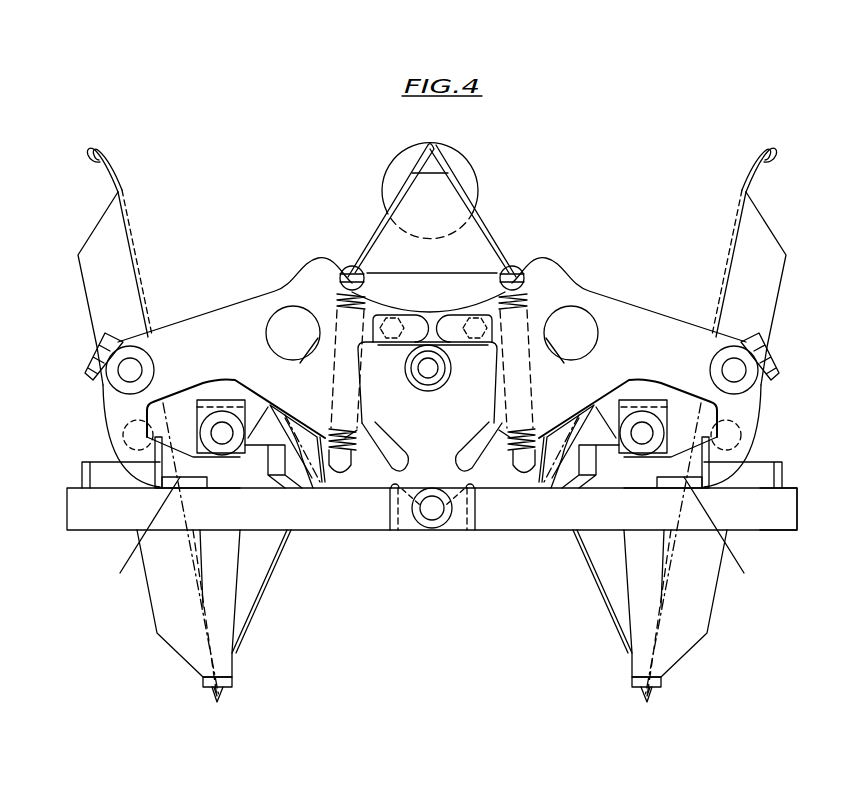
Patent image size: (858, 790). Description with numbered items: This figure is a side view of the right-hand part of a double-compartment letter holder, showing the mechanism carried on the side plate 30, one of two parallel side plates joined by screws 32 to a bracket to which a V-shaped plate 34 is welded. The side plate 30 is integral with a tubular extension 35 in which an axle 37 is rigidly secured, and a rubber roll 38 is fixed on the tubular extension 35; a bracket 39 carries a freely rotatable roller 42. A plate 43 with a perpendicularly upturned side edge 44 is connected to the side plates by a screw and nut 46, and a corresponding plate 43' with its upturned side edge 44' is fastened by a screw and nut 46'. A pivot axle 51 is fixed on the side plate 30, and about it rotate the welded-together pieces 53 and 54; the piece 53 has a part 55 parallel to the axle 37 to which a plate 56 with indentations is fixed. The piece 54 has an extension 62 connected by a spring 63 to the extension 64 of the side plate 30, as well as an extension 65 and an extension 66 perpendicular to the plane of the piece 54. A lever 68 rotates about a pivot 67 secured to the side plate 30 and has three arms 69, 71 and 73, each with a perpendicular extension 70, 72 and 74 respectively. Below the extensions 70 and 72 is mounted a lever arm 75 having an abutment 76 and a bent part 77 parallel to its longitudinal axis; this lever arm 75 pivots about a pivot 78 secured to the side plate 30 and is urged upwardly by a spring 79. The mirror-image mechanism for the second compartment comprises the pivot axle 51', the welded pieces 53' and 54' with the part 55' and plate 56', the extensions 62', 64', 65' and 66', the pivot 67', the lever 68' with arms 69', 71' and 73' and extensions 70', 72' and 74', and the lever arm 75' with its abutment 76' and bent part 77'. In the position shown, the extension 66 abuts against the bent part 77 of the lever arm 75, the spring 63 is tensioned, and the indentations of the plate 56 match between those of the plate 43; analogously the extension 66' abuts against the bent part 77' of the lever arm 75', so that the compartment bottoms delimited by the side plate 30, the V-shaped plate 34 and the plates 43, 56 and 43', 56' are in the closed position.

The side plate 30 is at (427, 391).
The screws 32 is at (460, 314).
The V-shaped plate 34 is at (392, 203).
The tubular extension 35 is at (436, 378).
The axle 37 is at (418, 372).
The rubber roll 38 is at (448, 380).
The bracket 39 is at (426, 172).
The roller 42 is at (458, 166).
The plate 43 is at (131, 242).
The plate 43' is at (728, 242).
The upturned side edge 44 is at (75, 288).
The upturned side edge 44' is at (790, 288).
The screw and nut 46 is at (107, 435).
The screw and nut 46' is at (764, 435).
The pivot axle 51 is at (102, 373).
The pivot axle 51' is at (763, 373).
The piece 53 is at (85, 356).
The piece 53' is at (784, 356).
The piece 54 is at (304, 372).
The piece 54' is at (636, 372).
The part 55 is at (297, 429).
The part 55' is at (566, 439).
The plate 56 is at (229, 550).
The plate 56' is at (626, 550).
The extension 62 is at (353, 468).
The extension 62' is at (507, 482).
The spring 63 is at (348, 436).
The extension 64 is at (344, 341).
The extension 64' is at (525, 341).
The extension 65 is at (385, 444).
The extension 65' is at (463, 446).
The extension 66 is at (145, 462).
The extension 66' is at (667, 462).
The pivot 67 is at (206, 425).
The pivot 67' is at (661, 425).
The lever 68 is at (236, 406).
The lever 68' is at (628, 406).
The arm 69 is at (273, 447).
The arm 69' is at (590, 447).
The extension 70 is at (299, 464).
The extension 70' is at (563, 464).
The arm 71 is at (184, 490).
The arm 71' is at (677, 491).
The extension 72 is at (96, 475).
The extension 72' is at (764, 472).
The arm 73 is at (205, 603).
The arm 73' is at (656, 603).
The extension 74 is at (238, 687).
The extension 74' is at (622, 687).
The lever arm 75 is at (432, 522).
The lever arm 75' is at (780, 524).
The abutment 76 is at (238, 488).
The abutment 76' is at (620, 490).
The bent part 77 is at (140, 535).
The bent part 77' is at (728, 533).
The pivot 78 is at (432, 512).
The spring 79 is at (414, 502).